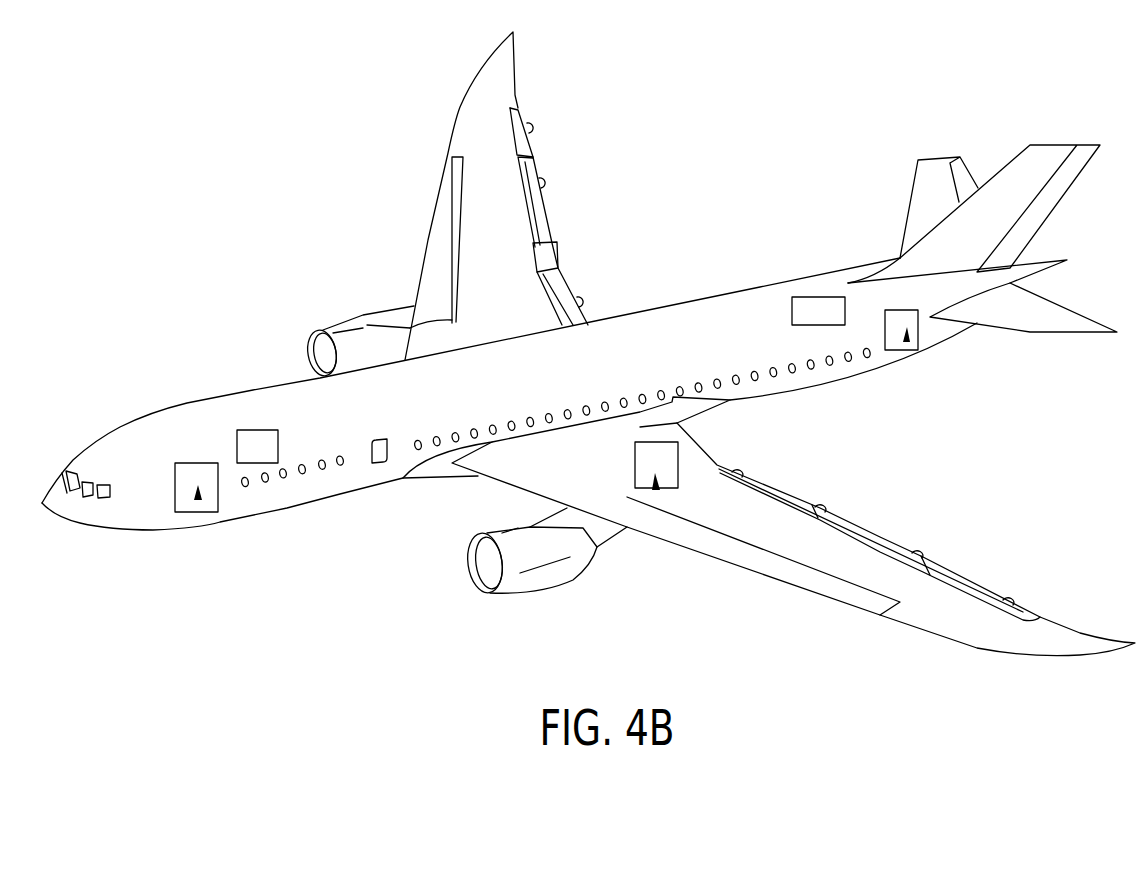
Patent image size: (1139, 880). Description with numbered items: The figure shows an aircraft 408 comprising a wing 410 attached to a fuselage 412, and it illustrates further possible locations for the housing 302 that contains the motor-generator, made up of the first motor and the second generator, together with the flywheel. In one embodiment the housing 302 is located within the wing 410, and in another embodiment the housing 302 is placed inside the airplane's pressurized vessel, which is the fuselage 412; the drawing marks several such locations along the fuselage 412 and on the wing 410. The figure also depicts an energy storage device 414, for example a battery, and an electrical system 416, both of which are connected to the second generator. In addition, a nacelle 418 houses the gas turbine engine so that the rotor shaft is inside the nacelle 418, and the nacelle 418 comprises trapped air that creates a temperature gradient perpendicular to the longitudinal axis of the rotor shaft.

The aircraft 408 is at (686, 202).
The wing 410 is at (486, 287).
The fuselage 412 is at (698, 330).
The energy storage device 414 is at (212, 462).
The electrical system 416 is at (883, 330).
The nacelle 418 is at (542, 572).
The housing 302 is at (197, 500).